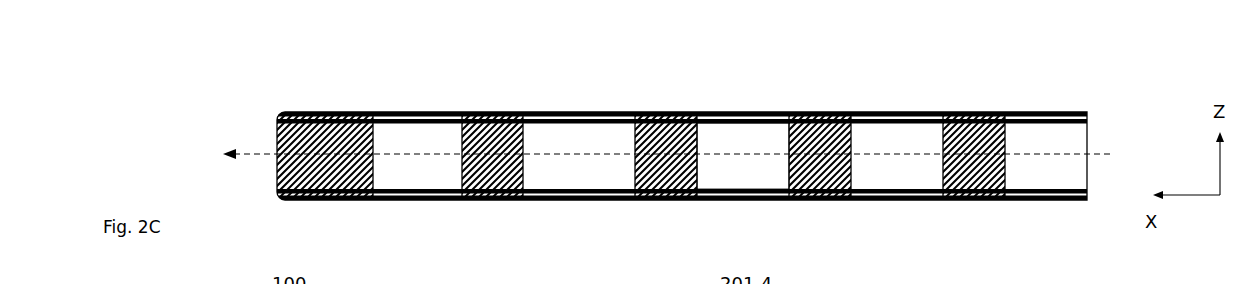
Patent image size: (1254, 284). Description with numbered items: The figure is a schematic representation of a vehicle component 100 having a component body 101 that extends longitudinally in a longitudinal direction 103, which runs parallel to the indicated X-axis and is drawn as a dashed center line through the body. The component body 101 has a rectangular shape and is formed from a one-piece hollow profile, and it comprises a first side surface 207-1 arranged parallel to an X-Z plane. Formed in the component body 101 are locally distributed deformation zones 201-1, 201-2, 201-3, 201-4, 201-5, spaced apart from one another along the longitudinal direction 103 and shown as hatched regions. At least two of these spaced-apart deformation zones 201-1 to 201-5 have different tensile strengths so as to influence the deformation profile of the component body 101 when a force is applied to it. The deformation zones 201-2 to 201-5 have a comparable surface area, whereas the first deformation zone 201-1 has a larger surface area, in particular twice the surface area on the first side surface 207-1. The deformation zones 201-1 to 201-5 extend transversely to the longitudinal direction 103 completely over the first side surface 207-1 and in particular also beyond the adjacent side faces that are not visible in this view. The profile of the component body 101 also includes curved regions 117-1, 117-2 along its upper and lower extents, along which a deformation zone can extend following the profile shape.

The vehicle component 100 is at (664, 123).
The component body 101 is at (563, 110).
The longitudinal direction 103 is at (688, 156).
The curved region 117-1 is at (1033, 110).
The curved region 117-2 is at (1017, 192).
The first deformation zone 201-1 is at (337, 133).
The deformation zone 201-2 is at (495, 132).
The deformation zone 201-3 is at (668, 130).
The deformation zone 201-4 is at (827, 133).
The deformation zone 201-5 is at (973, 125).
The first side surface 207-1 is at (747, 135).